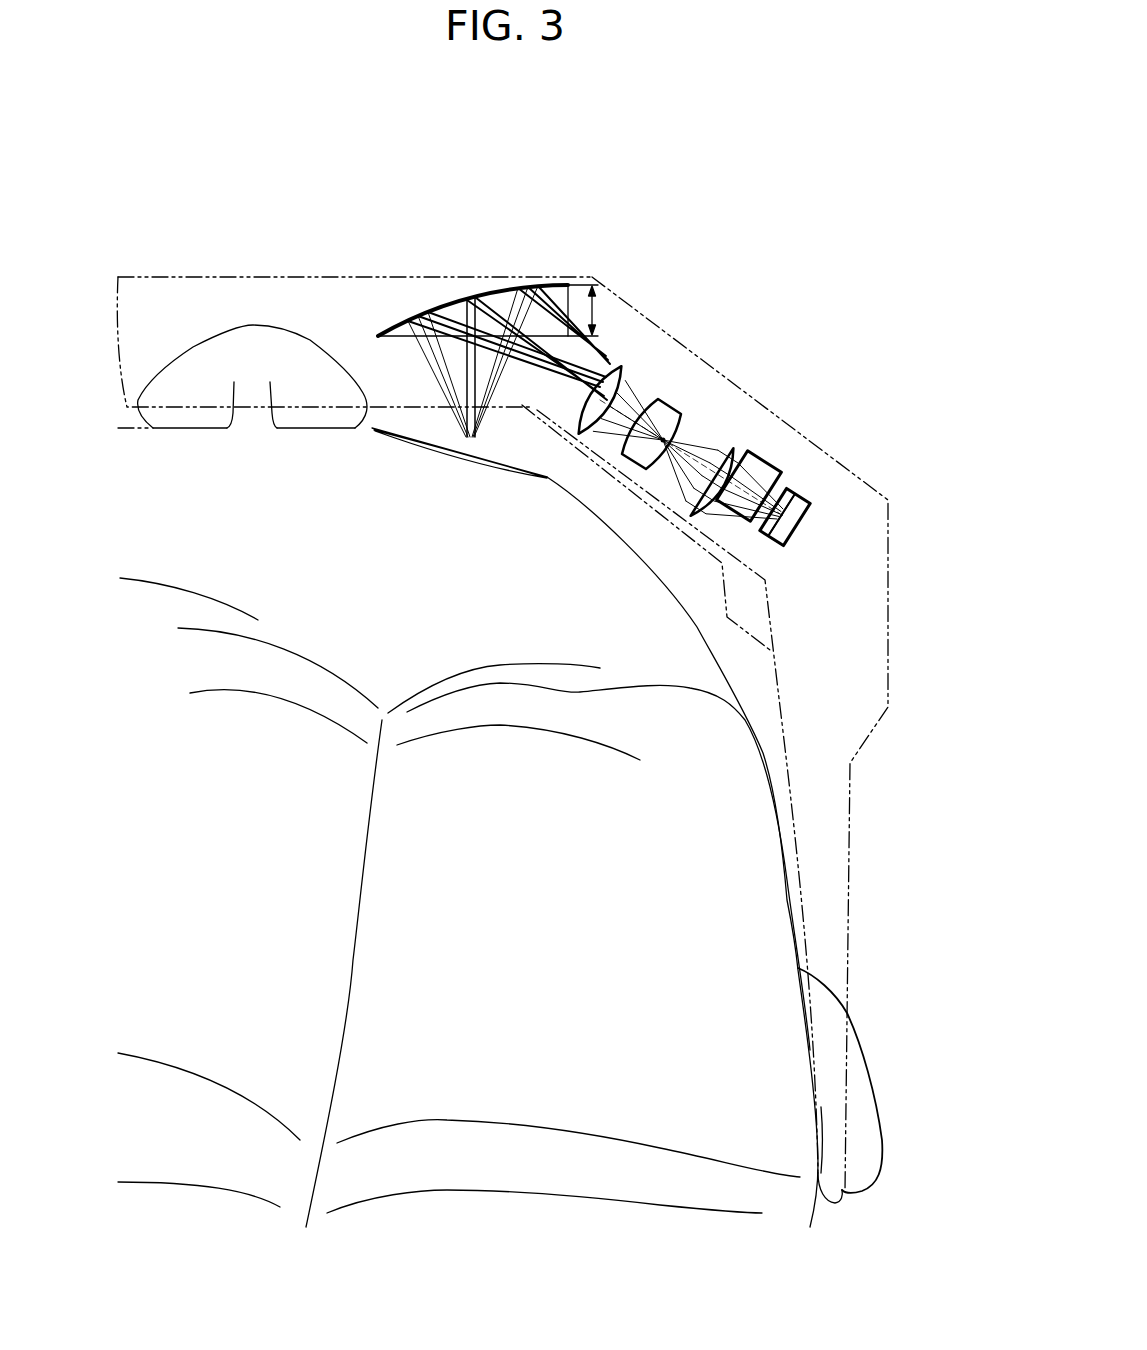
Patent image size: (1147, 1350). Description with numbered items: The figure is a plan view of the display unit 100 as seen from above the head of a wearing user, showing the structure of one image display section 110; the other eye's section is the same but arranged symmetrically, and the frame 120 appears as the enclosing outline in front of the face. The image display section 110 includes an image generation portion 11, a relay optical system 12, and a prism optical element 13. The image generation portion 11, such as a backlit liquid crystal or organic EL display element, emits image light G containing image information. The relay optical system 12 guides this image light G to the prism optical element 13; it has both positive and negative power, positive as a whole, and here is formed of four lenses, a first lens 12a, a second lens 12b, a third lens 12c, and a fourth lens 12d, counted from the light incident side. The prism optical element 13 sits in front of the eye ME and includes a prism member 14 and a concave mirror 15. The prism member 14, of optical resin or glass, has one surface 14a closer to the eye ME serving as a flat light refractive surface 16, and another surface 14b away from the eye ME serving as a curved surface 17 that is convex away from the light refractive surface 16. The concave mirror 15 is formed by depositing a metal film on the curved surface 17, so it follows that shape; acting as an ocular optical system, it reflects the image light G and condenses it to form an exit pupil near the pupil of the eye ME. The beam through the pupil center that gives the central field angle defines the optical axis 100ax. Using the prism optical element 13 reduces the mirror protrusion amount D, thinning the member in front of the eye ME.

The display unit 100 is at (705, 671).
The image display section 110 is at (765, 172).
The frame 120 is at (182, 276).
The image generation portion 11 is at (806, 512).
The relay optical system 12 is at (739, 388).
The first lens 12a is at (783, 490).
The second lens 12b is at (770, 472).
The third lens 12c is at (665, 413).
The fourth lens 12d is at (625, 372).
The prism optical element 13 is at (473, 358).
The prism member 14 is at (473, 352).
The one surface 14a is at (466, 430).
The another surface 14b is at (490, 258).
The concave mirror 15 is at (490, 258).
The light refractive surface 16 is at (395, 337).
The curved surface 17 is at (487, 293).
The optical axis 100ax is at (692, 440).
The eye ME is at (469, 445).
The mirror protrusion amount D is at (601, 310).
The image light G is at (788, 492).